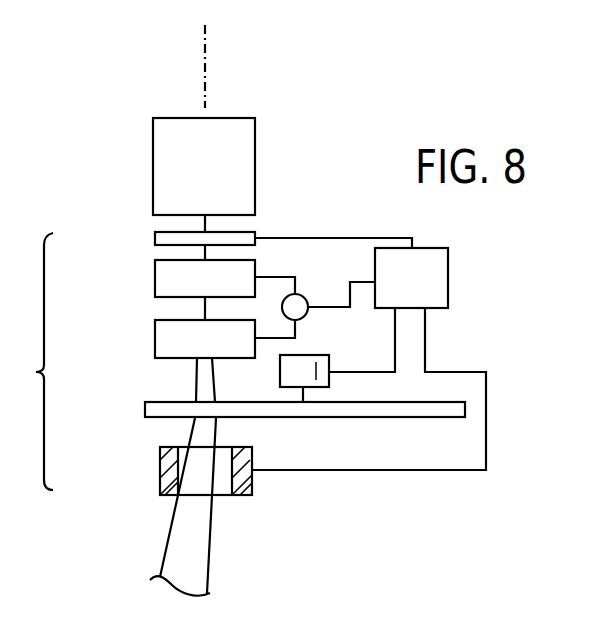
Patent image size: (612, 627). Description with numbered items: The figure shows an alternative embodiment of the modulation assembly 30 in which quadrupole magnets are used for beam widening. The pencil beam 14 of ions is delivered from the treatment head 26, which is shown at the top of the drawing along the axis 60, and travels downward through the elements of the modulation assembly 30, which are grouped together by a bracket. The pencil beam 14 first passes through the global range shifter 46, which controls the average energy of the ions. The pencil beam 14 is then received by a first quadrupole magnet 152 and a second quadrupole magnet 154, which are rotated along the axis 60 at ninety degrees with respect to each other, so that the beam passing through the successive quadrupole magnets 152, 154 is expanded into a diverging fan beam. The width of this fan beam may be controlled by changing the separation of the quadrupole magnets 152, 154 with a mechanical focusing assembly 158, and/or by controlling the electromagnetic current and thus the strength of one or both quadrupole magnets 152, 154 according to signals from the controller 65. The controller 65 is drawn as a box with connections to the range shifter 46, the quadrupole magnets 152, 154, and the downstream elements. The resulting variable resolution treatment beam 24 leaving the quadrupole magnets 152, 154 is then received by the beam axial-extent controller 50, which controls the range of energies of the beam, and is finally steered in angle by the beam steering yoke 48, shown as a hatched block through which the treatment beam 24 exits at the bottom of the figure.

The axis 60 is at (203, 67).
The treatment head 26 is at (218, 179).
The global range shifter 46 is at (155, 238).
The pencil beam 14 is at (205, 252).
The first quadrupole magnet 152 is at (155, 274).
The second quadrupole magnet 154 is at (155, 340).
The mechanical focusing assembly 158 is at (302, 318).
The controller 65 is at (425, 290).
The beam axial-extent controller 50 is at (145, 410).
The beam steering yoke 48 is at (160, 472).
The variable resolution treatment beam 24 is at (172, 530).
The modulation assembly 30 is at (29, 361).